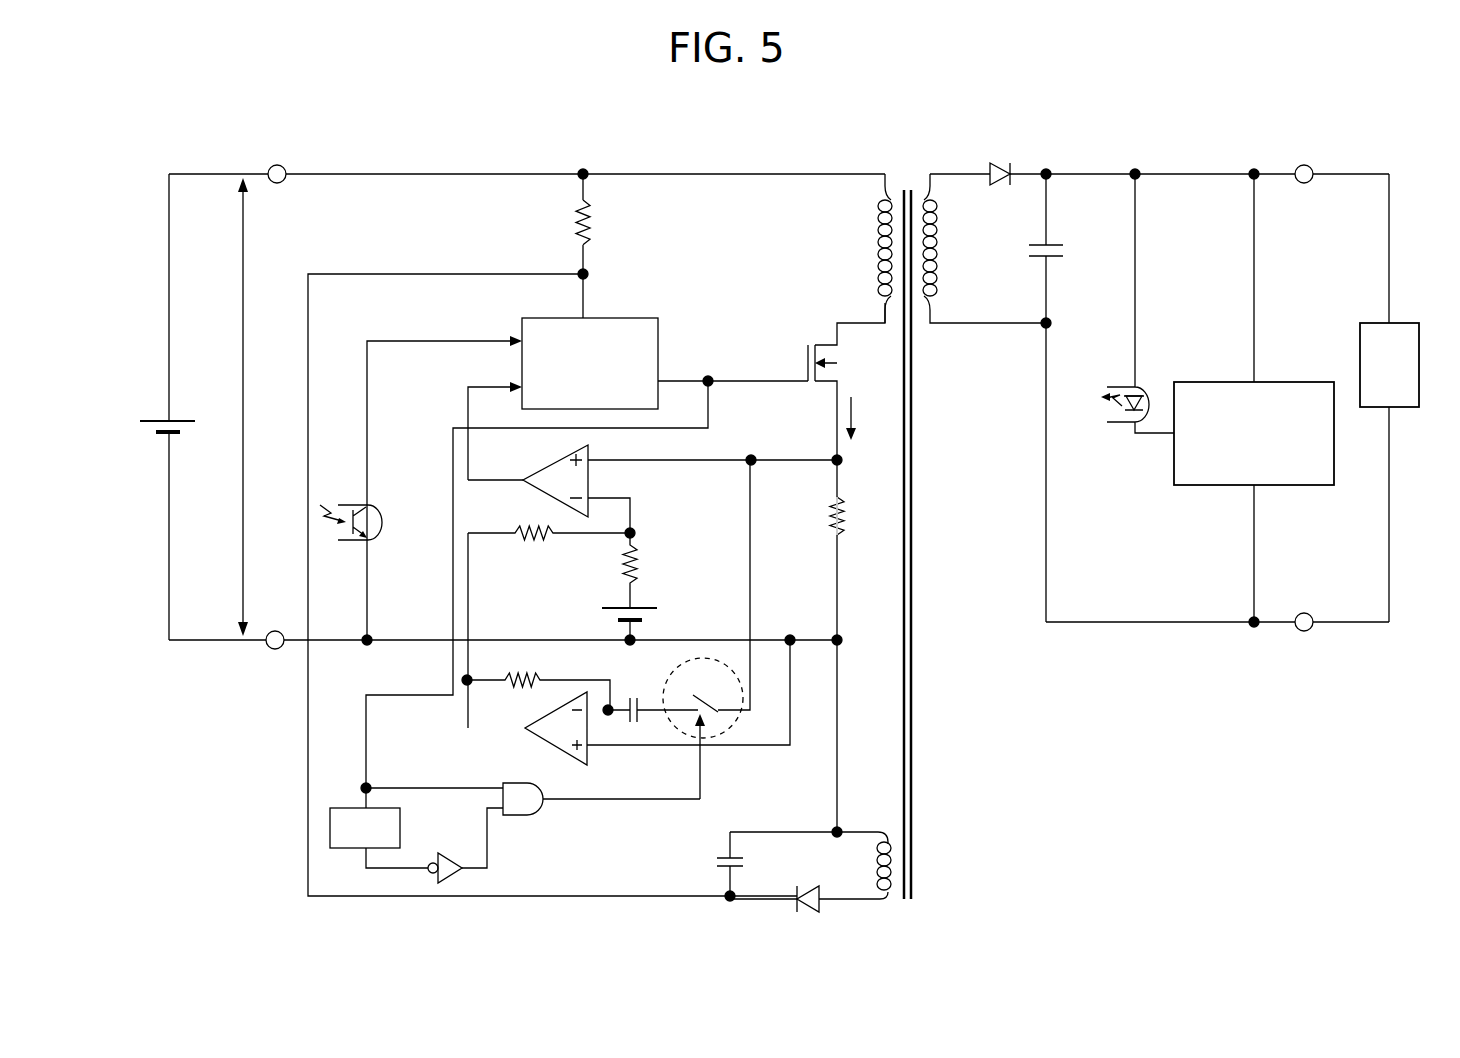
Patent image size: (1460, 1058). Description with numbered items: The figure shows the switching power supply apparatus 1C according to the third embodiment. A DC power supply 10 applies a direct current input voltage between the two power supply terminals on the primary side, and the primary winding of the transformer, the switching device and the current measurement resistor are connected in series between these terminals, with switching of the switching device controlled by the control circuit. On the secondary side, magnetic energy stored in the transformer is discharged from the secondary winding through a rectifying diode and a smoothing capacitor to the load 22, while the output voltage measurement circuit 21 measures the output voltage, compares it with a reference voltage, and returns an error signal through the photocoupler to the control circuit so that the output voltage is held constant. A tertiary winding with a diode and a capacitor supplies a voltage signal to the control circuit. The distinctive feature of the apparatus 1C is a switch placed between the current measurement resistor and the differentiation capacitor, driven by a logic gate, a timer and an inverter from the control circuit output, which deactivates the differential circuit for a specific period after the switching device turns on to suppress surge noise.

The switching power supply apparatus 1C is at (763, 133).
The DC power supply 10 is at (143, 421).
The output voltage measurement circuit 21 is at (1305, 382).
The load 22 is at (1410, 323).